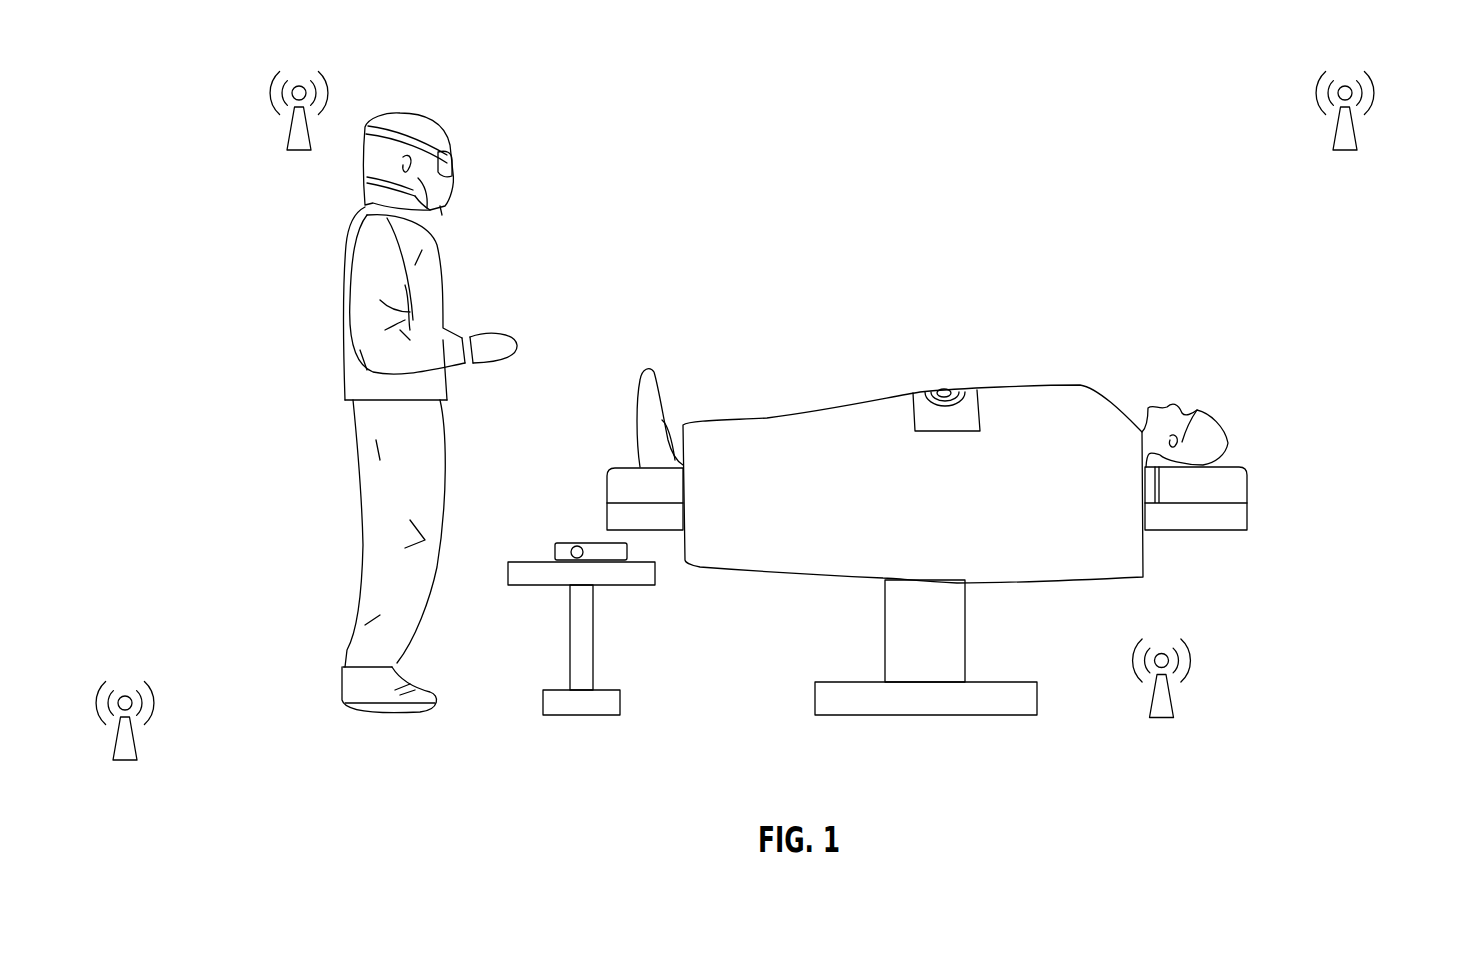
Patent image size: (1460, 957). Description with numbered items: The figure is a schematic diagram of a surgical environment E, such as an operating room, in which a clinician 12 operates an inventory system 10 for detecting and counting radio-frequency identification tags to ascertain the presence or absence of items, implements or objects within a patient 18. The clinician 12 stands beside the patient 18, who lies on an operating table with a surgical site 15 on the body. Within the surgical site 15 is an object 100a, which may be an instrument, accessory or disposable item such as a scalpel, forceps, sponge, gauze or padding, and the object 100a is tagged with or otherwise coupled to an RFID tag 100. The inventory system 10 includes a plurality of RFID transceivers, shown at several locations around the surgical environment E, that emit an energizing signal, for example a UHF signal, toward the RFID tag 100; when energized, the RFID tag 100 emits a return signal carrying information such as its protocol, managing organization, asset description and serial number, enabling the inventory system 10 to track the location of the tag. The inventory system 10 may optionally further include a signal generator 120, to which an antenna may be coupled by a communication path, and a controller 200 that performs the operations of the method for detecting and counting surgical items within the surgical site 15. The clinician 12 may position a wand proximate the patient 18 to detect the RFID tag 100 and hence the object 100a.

The inventory system 10 is at (652, 348).
The clinician 12 is at (347, 248).
The surgical site 15 is at (933, 407).
The patient 18 is at (1213, 420).
The RFID tag 100 is at (947, 389).
The object 100a is at (927, 390).
The signal generator 120 is at (630, 552).
The controller 200 is at (565, 560).
The surgical environment E is at (1005, 290).